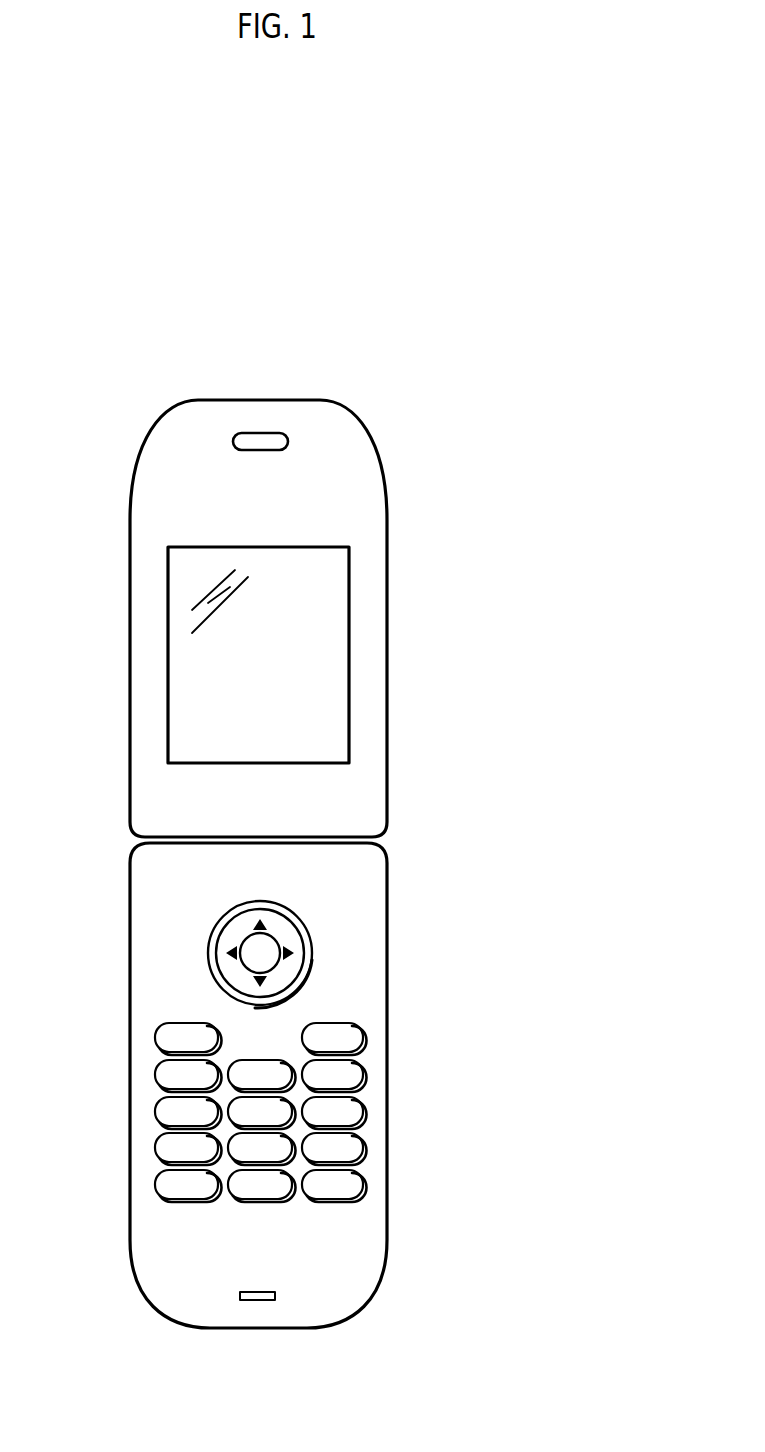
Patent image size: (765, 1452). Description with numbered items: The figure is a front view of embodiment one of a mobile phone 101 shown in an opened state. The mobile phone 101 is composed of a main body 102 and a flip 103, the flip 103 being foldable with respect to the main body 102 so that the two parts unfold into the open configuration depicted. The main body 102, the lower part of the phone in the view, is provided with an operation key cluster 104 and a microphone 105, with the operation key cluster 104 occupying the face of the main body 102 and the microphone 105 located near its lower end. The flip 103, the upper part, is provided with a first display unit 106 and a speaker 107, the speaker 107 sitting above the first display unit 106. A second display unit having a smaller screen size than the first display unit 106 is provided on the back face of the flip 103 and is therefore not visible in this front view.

The mobile phone 101 is at (364, 356).
The main body 102 is at (387, 912).
The flip 103 is at (387, 492).
The operation key cluster 104 is at (115, 912).
The microphone 105 is at (275, 1296).
The first display unit 106 is at (332, 653).
The speaker 107 is at (255, 432).